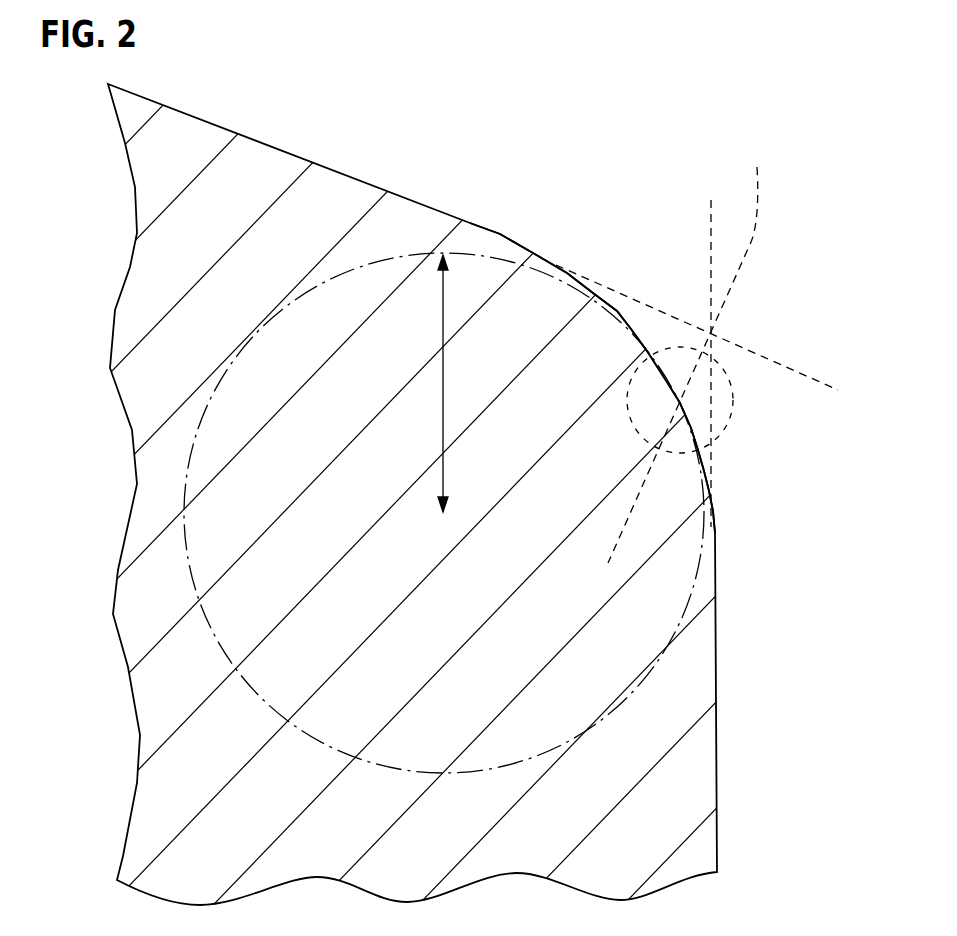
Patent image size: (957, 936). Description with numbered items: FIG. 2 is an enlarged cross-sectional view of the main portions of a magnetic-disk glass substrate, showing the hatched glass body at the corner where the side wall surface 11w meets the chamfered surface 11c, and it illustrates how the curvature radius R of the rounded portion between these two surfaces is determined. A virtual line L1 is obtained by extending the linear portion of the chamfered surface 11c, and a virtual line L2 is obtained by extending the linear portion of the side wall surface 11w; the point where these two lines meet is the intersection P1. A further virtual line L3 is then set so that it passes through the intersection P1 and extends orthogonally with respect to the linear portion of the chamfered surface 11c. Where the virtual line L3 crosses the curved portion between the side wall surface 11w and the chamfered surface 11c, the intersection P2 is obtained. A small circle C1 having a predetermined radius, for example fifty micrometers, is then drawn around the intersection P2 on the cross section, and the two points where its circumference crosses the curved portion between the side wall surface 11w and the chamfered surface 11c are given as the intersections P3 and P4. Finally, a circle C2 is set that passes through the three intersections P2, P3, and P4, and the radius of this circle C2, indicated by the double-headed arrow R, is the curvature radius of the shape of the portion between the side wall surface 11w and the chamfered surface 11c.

The side wall surface 11w is at (715, 660).
The chamfered surface 11c is at (350, 176).
The circle C2 is at (421, 250).
The circle C1 is at (733, 388).
The curvature radius R is at (433, 383).
The virtual line L1 is at (822, 378).
The virtual line L2 is at (709, 230).
The virtual line L3 is at (687, 352).
The intersection P1 is at (708, 328).
The intersection P2 is at (684, 402).
The intersection P3 is at (652, 358).
The intersection P4 is at (701, 451).